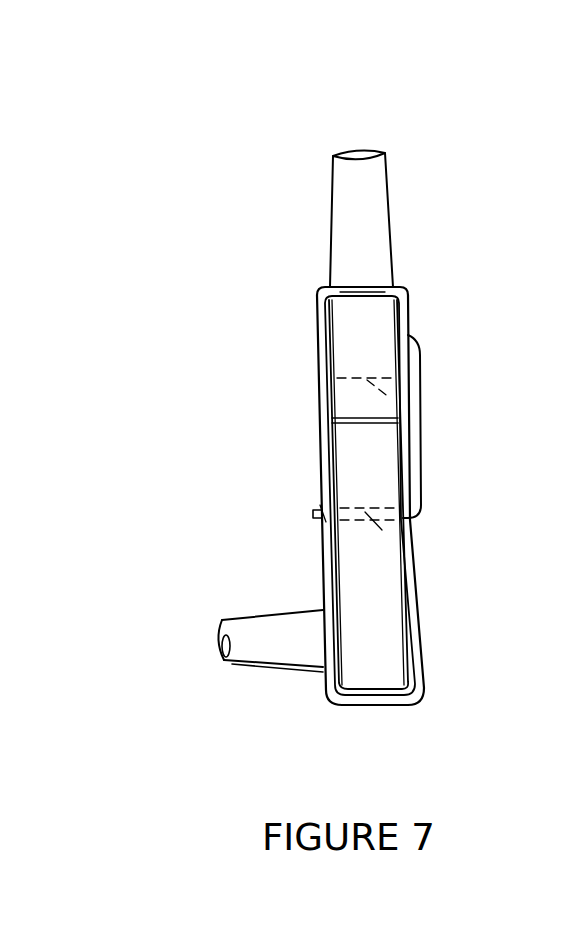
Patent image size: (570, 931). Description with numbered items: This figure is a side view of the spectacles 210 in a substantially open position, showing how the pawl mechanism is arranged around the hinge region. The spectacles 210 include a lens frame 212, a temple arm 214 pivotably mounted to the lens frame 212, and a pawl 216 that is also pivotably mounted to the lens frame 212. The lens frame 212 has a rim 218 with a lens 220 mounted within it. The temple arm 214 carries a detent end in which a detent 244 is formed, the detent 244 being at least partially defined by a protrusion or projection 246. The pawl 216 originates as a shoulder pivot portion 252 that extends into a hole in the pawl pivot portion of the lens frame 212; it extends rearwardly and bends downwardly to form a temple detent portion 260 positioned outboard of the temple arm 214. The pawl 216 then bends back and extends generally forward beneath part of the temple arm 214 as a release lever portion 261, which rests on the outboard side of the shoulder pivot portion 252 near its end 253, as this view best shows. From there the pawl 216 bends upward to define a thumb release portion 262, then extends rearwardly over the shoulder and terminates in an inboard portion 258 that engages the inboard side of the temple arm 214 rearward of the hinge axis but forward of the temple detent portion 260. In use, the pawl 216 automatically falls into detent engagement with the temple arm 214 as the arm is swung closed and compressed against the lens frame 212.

The spectacles 210 is at (132, 237).
The lens frame 212 is at (307, 694).
The temple arm 214 is at (348, 150).
The pawl 216 is at (403, 328).
The rim 218 is at (255, 628).
The lens 220 is at (290, 670).
The detent 244 is at (405, 408).
The projection 246 is at (368, 410).
The shoulder pivot portion 252 is at (365, 513).
The end 253 is at (314, 515).
The inboard portion 258 is at (413, 350).
The temple detent portion 260 is at (362, 292).
The release lever portion 261 is at (318, 512).
The thumb release portion 262 is at (380, 703).